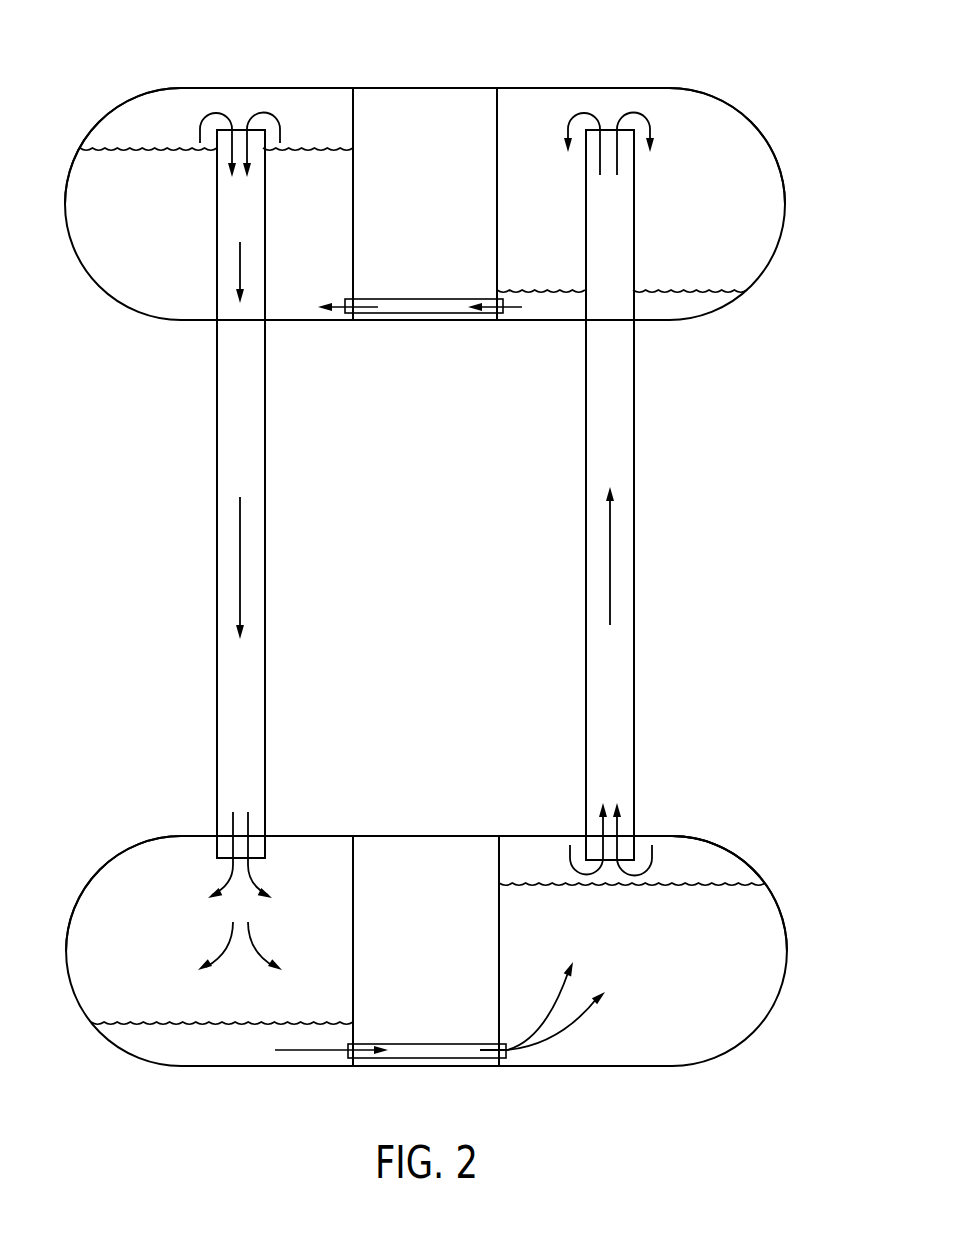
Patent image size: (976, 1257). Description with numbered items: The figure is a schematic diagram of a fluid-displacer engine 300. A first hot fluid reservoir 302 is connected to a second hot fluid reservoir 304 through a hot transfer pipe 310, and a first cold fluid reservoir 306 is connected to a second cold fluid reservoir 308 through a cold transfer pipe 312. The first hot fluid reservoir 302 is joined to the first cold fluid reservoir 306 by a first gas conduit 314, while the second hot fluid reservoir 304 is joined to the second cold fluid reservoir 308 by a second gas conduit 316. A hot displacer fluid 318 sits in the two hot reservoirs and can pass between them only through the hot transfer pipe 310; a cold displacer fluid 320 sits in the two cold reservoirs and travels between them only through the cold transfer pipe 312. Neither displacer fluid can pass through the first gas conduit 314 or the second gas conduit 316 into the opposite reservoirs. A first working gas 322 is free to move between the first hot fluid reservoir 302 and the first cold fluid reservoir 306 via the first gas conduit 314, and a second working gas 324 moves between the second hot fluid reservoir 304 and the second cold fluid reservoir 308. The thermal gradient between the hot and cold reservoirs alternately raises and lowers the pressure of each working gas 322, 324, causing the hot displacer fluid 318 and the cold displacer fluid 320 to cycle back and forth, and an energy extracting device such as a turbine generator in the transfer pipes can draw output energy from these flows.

The fluid-displacer engine 300 is at (100, 31).
The first hot fluid reservoir 302 is at (140, 298).
The second hot fluid reservoir 304 is at (770, 205).
The first cold fluid reservoir 306 is at (102, 888).
The second cold fluid reservoir 308 is at (774, 952).
The hot transfer pipe 310 is at (425, 307).
The cold transfer pipe 312 is at (427, 1050).
The first gas conduit 314 is at (225, 545).
The second gas conduit 316 is at (625, 543).
The hot displacer fluid 318 is at (298, 305).
The cold displacer fluid 320 is at (547, 893).
The first working gas 322 is at (87, 987).
The second working gas 324 is at (718, 862).